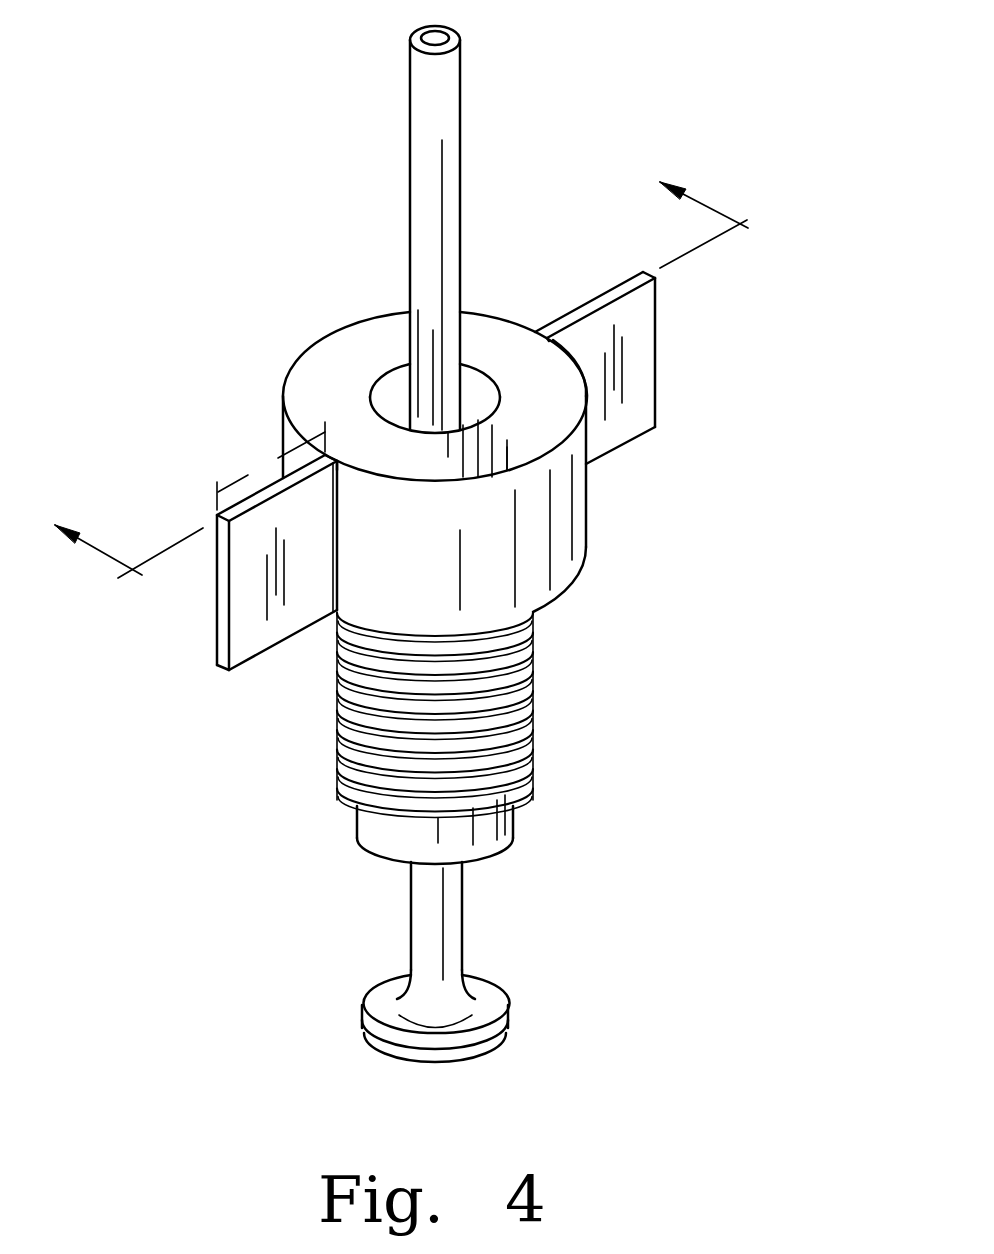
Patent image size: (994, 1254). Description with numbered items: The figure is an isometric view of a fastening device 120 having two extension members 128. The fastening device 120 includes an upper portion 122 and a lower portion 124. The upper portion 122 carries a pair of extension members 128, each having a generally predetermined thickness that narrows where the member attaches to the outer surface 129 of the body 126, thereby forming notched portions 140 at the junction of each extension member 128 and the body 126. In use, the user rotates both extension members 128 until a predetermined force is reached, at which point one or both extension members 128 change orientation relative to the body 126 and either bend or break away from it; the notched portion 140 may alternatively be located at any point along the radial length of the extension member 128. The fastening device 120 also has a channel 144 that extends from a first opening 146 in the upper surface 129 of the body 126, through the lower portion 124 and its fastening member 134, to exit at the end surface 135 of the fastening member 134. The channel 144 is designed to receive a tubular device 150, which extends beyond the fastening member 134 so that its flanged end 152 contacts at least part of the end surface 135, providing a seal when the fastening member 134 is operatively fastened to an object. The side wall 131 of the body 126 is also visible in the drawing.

The fastening device 120 is at (155, 167).
The upper portion 122 is at (203, 388).
The lower portion 124 is at (600, 693).
The body 126 is at (482, 313).
The extension members 128 is at (704, 337).
The outer surface 129 is at (342, 348).
The side wall 131 is at (557, 550).
The fastening member 134 is at (337, 712).
The end surface 135 is at (493, 852).
The notched portions 140 is at (549, 339).
The channel 144 is at (481, 395).
The first opening 146 is at (500, 422).
The tubular device 150 is at (463, 925).
The flanged end 152 is at (512, 1033).